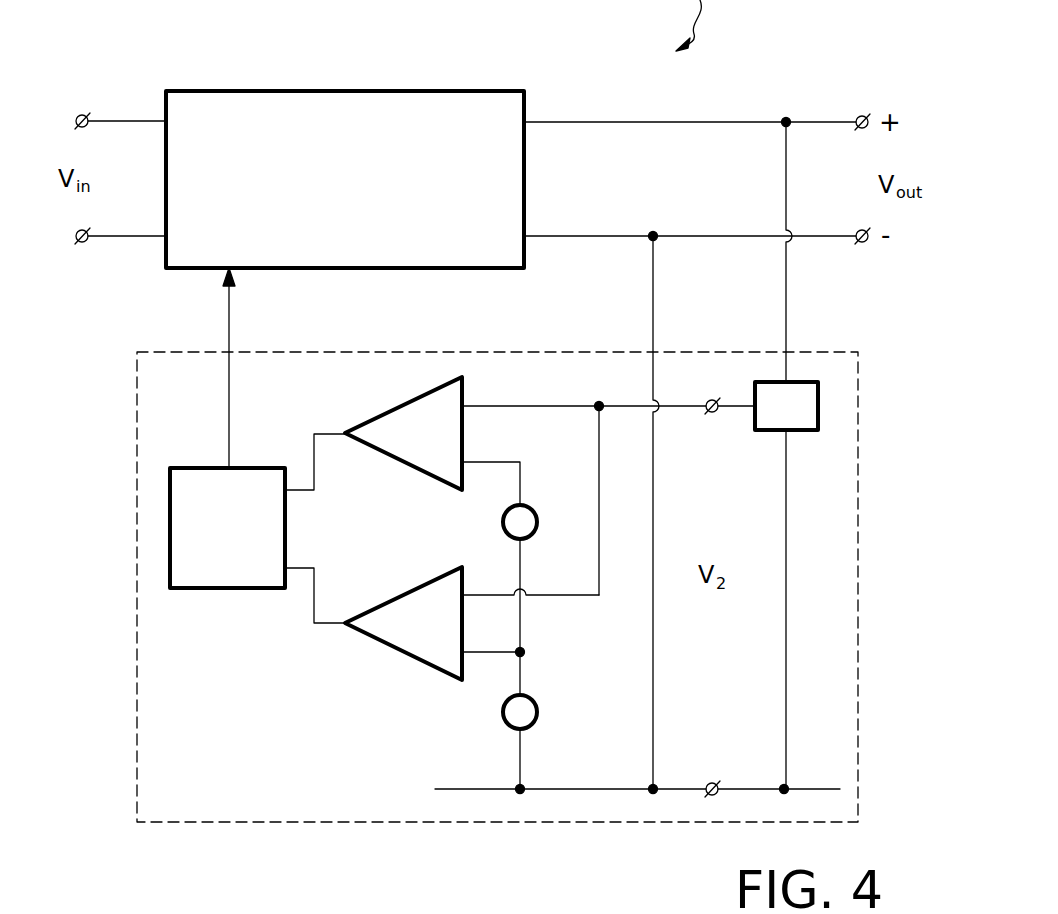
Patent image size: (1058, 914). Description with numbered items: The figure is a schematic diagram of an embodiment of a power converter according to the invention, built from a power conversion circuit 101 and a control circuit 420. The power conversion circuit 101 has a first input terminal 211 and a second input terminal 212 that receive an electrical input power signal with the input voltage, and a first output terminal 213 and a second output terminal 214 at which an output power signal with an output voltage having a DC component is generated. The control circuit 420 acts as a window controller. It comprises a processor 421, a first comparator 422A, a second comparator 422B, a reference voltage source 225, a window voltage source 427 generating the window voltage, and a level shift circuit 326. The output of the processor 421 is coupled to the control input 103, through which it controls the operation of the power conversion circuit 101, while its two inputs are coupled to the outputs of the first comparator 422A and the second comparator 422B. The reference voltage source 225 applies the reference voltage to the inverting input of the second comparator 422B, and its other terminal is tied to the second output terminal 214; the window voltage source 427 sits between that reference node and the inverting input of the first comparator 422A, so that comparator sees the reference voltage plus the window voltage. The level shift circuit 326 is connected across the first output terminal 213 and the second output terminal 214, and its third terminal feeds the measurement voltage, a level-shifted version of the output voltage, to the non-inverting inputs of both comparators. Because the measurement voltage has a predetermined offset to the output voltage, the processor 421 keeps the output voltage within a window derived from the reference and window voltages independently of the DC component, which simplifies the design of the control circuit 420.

The power conversion circuit 101 is at (524, 180).
The control input 103 is at (229, 312).
The first input terminal 211 is at (125, 113).
The second input terminal 212 is at (128, 240).
The first output terminal 213 is at (619, 118).
The second output terminal 214 is at (580, 240).
The reference voltage source 225 is at (503, 712).
The level shift circuit 326 is at (800, 432).
The control circuit 420 is at (858, 538).
The processor 421 is at (228, 590).
The first comparator 422A is at (377, 455).
The second comparator 422B is at (377, 642).
The window voltage source 427 is at (503, 522).